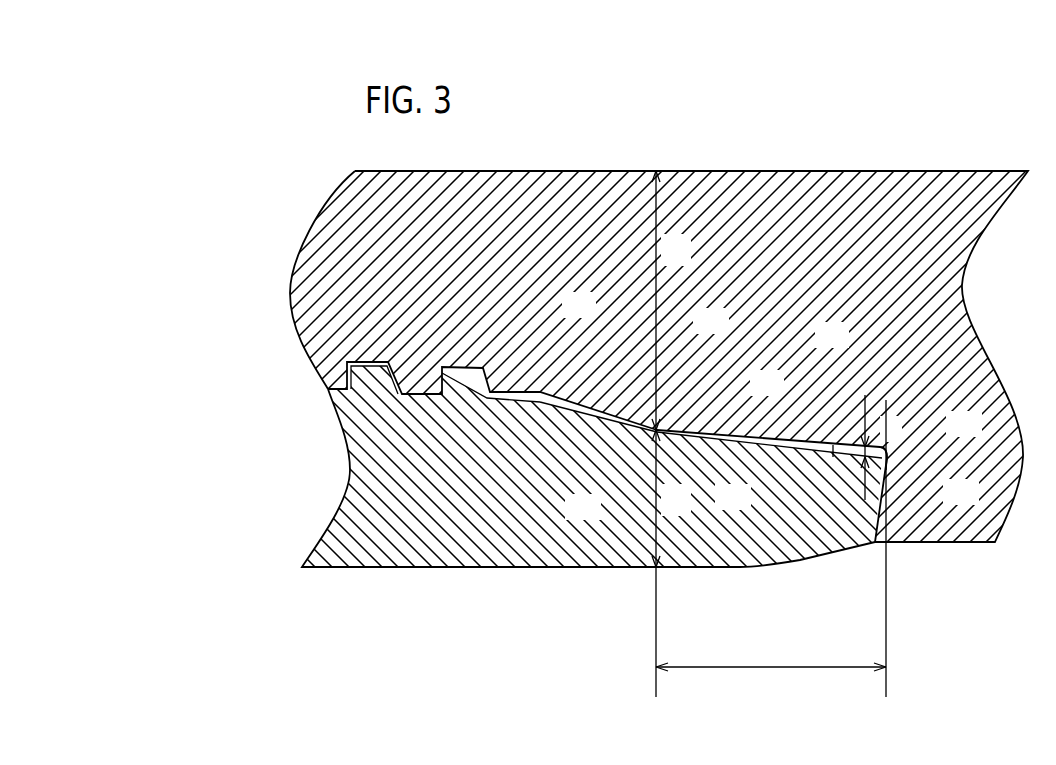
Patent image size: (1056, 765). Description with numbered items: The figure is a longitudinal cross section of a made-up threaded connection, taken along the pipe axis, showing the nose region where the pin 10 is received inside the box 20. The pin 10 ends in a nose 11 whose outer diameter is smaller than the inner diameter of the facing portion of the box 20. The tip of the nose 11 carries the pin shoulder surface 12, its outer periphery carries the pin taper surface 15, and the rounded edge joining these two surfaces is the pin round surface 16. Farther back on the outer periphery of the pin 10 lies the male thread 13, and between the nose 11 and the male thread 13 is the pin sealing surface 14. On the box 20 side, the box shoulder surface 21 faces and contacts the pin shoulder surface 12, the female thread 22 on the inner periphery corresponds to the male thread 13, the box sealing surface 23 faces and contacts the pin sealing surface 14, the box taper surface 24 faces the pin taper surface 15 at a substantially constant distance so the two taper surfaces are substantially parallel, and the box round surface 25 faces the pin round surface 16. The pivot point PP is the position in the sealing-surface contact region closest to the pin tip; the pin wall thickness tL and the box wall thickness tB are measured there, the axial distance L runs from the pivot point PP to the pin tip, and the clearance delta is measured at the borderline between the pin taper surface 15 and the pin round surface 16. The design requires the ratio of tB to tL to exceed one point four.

The pin 10 is at (380, 595).
The box 20 is at (890, 147).
The nose 11 is at (753, 552).
The pin shoulder surface 12 is at (880, 517).
The male thread 13 is at (346, 361).
The pin sealing surface 14 is at (572, 403).
The pin taper surface 15 is at (753, 440).
The pin round surface 16 is at (887, 455).
The box shoulder surface 21 is at (882, 505).
The female thread 22 is at (412, 393).
The box sealing surface 23 is at (607, 416).
The box taper surface 24 is at (730, 441).
The box round surface 25 is at (892, 447).
The pivot point PP is at (657, 430).
The wall thickness of the box tB is at (668, 300).
The wall thickness of the pin tL is at (667, 498).
The distance between the pivot point and the tip of the pin L is at (771, 548).
The clearance delta is at (877, 447).